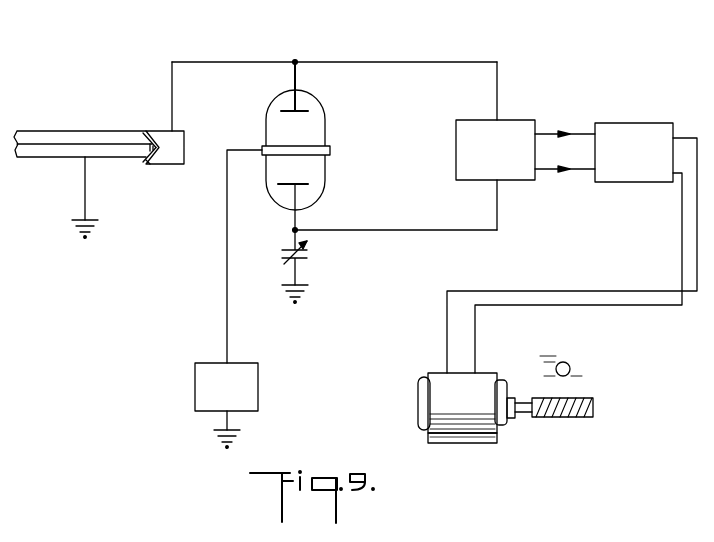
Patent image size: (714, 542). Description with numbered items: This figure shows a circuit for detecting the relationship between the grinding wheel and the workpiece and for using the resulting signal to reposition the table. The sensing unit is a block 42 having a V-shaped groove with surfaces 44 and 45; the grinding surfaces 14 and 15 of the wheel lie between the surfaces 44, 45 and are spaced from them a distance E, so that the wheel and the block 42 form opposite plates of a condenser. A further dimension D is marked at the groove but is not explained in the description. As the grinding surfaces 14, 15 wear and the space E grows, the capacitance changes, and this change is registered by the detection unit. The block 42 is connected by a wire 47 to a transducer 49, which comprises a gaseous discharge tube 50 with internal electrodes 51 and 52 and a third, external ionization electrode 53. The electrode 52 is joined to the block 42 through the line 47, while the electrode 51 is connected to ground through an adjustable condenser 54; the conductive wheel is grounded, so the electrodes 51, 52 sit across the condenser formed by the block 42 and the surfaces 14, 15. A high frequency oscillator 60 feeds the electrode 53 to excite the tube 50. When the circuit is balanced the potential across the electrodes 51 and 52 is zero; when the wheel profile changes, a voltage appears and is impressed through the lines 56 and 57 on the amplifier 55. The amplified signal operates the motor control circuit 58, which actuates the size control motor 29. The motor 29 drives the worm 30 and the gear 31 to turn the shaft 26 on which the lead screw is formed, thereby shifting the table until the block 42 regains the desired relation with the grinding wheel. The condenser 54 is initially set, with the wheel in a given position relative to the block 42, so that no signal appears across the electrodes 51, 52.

The grinding surface 15 is at (142, 135).
The groove surface 45 is at (158, 131).
The block 42 is at (185, 137).
The wire 47 is at (172, 83).
The gap depth D is at (146, 149).
The grinding surface 14 is at (148, 153).
The distance E is at (153, 155).
The groove surface 44 is at (156, 163).
The line 56 is at (407, 62).
The transducer 49 is at (330, 131).
The electrode 52 is at (306, 113).
The external ionization electrode 53 is at (332, 152).
The gaseous discharge tube 50 is at (325, 183).
The electrode 51 is at (310, 190).
The line 57 is at (423, 232).
The adjustable condenser 54 is at (312, 253).
The high frequency oscillator 60 is at (248, 393).
The amplifier 55 is at (470, 177).
The motor control circuit 58 is at (638, 125).
The size control motor 29 is at (442, 443).
The worm 30 is at (570, 419).
The gear 31 is at (594, 369).
The shaft 26 is at (545, 371).